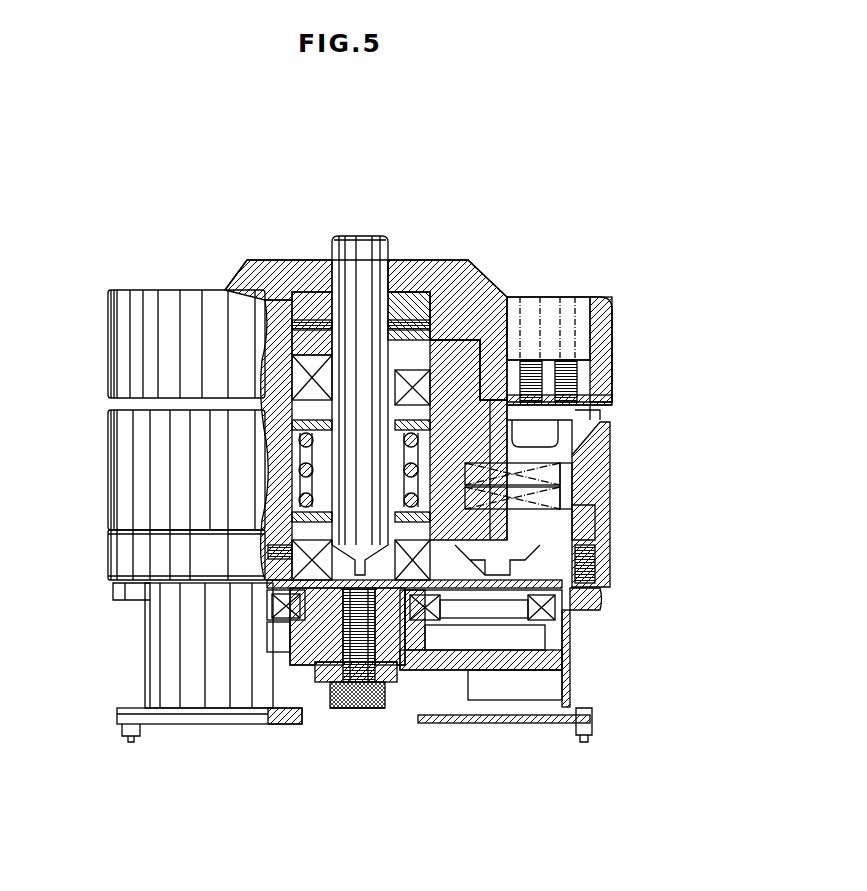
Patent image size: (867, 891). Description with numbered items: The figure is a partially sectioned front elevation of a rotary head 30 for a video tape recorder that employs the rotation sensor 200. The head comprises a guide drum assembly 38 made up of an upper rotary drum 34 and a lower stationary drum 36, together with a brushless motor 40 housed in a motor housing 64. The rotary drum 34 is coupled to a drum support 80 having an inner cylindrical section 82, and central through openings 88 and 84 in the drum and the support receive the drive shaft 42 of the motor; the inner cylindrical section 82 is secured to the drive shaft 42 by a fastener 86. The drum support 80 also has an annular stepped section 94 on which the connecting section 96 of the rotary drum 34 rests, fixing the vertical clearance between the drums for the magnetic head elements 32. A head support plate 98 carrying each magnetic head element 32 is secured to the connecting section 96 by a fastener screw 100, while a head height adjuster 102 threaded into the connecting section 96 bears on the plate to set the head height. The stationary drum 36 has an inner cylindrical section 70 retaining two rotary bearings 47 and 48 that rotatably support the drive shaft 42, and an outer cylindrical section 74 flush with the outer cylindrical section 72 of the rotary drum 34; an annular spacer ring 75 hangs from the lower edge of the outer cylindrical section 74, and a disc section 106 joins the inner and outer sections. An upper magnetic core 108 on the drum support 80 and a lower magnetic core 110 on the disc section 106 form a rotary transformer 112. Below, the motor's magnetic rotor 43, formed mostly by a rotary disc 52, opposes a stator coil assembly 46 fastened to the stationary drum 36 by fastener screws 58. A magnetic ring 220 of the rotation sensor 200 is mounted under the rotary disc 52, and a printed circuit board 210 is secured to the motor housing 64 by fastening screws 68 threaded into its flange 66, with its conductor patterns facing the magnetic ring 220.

The rotary head 30 is at (590, 272).
The magnetic head element 32 is at (615, 407).
The upper rotary drum 34 is at (617, 327).
The lower stationary drum 36 is at (613, 516).
The guide drum assembly 38 is at (100, 397).
The brushless motor 40 is at (416, 687).
The drive shaft 42 is at (362, 270).
The magnetic rotor 43 is at (575, 646).
The stator coil assembly 46 is at (566, 618).
The rotary bearing 47 is at (280, 345).
The rotary bearing 48 is at (300, 547).
The rotary disc 52 is at (556, 672).
The fastener screw 58 is at (582, 598).
The motor housing 64 is at (153, 669).
The flange 66 is at (126, 700).
The fastening screw 68 is at (584, 730).
The inner cylindrical section 70 is at (305, 400).
The outer cylindrical section 72 is at (612, 304).
The outer cylindrical section 74 is at (128, 471).
The annular spacer ring 75 is at (598, 565).
The drum support 80 is at (498, 395).
The inner cylindrical section 82 is at (405, 300).
The central through opening 84 is at (341, 255).
The fastener 86 is at (463, 343).
The central through opening 88 is at (380, 302).
The annular stepped section 94 is at (500, 405).
The connecting section 96 is at (512, 400).
The head support plate 98 is at (598, 420).
The fastener screw 100 is at (570, 425).
The head height adjuster 102 is at (572, 366).
The disc section 106 is at (565, 510).
The upper magnetic core 108 is at (575, 470).
The lower magnetic core 110 is at (565, 488).
The rotary transformer 112 is at (580, 478).
The rotation sensor 200 is at (318, 720).
The printed circuit board 210 is at (280, 727).
The magnetic ring 220 is at (492, 714).